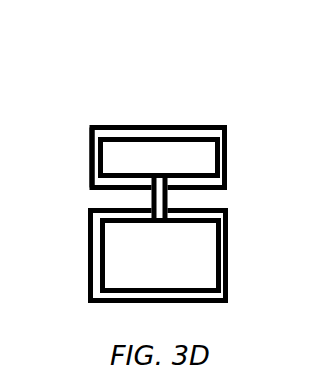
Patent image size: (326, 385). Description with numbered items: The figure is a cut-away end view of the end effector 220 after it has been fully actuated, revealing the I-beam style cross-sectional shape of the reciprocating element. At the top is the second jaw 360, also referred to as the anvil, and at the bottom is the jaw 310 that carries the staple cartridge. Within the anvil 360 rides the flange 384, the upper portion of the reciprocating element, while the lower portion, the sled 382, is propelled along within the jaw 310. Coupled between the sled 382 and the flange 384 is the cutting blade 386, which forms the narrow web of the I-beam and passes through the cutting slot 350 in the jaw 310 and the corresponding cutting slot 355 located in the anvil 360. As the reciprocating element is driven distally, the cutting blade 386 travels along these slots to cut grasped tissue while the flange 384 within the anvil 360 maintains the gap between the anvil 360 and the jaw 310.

The end effector 220 is at (184, 52).
The second jaw 360 is at (113, 127).
The flange 384 is at (121, 157).
The cutting slot 355 is at (118, 171).
The cutting blade 386 is at (151, 200).
The cutting slot 350 is at (150, 219).
The sled 382 is at (157, 253).
The jaw 310 is at (100, 303).